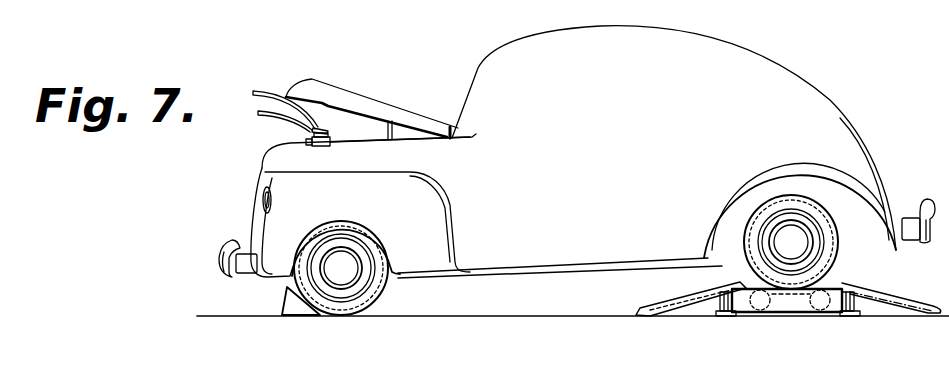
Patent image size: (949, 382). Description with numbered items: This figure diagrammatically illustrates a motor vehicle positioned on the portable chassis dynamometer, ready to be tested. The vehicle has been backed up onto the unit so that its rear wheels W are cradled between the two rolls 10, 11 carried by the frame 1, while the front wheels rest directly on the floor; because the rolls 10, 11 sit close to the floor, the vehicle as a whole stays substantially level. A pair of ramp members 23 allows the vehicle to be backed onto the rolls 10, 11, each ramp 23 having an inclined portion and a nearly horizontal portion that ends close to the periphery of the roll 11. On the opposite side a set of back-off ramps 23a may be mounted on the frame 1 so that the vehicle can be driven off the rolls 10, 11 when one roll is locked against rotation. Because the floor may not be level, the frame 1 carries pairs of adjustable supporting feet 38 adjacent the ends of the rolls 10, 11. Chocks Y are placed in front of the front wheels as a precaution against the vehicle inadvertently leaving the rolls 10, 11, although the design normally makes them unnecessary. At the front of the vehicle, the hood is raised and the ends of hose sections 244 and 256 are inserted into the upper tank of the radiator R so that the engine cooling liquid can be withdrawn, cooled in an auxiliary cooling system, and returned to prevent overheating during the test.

The hose section 244 is at (258, 92).
The hose section 256 is at (271, 118).
The radiator R is at (331, 141).
The chock Y is at (283, 297).
The ramp member 23 is at (682, 298).
The back-off ramp 23a is at (918, 298).
The frame 1 is at (785, 321).
The roll 11 is at (755, 307).
The roll 10 is at (803, 313).
The adjustable supporting foot 38 is at (713, 313).
The rear wheel W is at (840, 263).